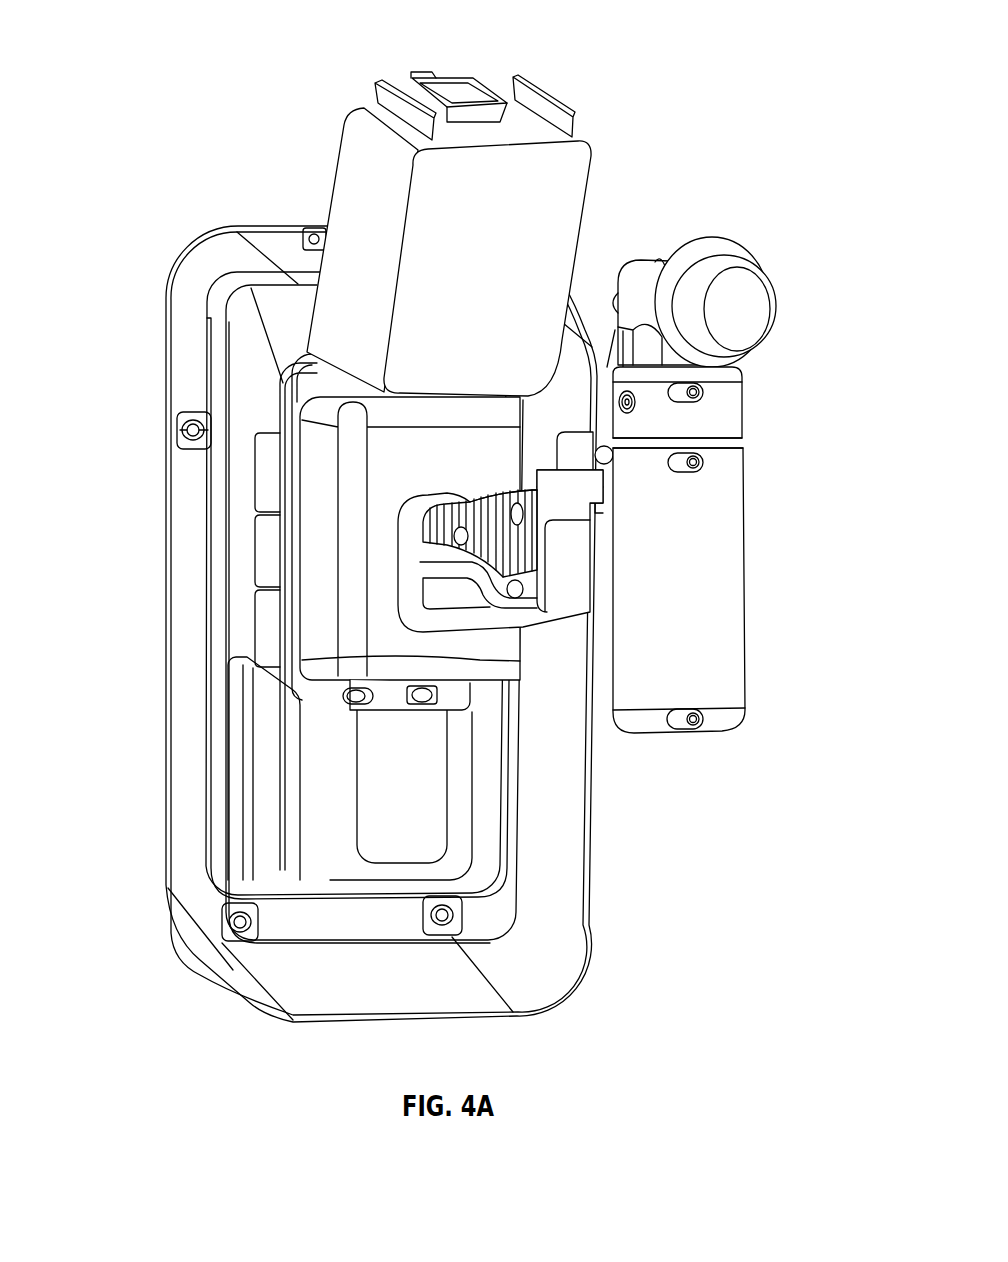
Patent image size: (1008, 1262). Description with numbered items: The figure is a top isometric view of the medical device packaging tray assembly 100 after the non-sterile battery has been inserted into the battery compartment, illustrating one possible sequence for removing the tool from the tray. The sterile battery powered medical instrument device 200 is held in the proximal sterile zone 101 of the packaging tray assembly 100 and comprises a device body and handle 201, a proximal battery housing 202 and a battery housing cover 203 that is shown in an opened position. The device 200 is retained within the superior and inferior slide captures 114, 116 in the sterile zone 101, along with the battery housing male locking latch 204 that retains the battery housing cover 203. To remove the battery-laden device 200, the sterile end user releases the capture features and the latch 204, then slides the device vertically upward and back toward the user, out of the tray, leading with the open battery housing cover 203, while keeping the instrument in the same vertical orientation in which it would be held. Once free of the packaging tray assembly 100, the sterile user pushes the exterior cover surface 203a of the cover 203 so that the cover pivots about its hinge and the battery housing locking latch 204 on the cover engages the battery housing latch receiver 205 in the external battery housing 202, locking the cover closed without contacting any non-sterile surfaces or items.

The medical device packaging tray assembly 100 is at (158, 133).
The sterile zone 101 is at (262, 398).
The superior slide capture 114 is at (328, 757).
The inferior slide capture 116 is at (505, 865).
The sterile battery powered medical instrument device 200 is at (766, 426).
The device body and handle 201 is at (545, 640).
The proximal battery housing 202 is at (325, 478).
The battery housing cover 203 is at (355, 158).
The exterior cover surface 203a is at (565, 190).
The battery housing male locking latch 204 is at (425, 73).
The battery housing latch receiver 205 is at (447, 697).